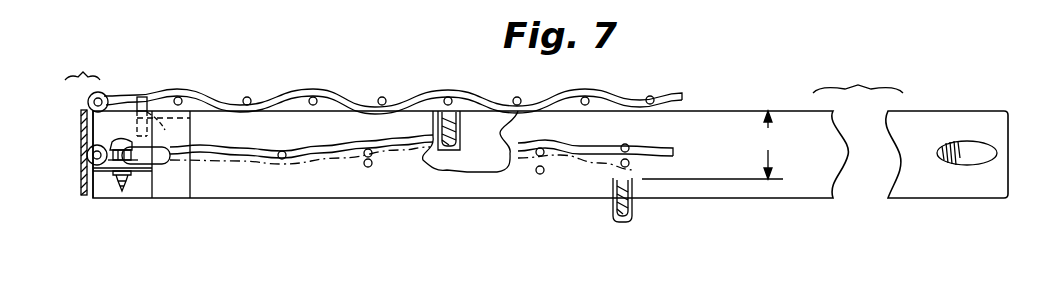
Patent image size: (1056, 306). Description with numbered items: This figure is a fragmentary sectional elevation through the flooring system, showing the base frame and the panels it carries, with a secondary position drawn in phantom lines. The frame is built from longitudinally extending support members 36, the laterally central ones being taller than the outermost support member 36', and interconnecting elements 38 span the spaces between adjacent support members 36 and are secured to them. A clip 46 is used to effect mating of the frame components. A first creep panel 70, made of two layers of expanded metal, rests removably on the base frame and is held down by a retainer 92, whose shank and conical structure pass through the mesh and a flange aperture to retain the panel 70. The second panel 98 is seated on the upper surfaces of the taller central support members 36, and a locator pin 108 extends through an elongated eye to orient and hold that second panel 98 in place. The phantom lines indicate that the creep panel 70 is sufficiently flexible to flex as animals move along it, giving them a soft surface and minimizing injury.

The longitudinally extending support member 36 is at (550, 175).
The outermost support member 36' is at (151, 175).
The interconnecting element 38 is at (458, 132).
The clip 46 is at (432, 165).
The first panel 70 is at (342, 138).
The retainer 92 is at (108, 190).
The second panel 98 is at (320, 84).
The locator pin 108 is at (165, 92).